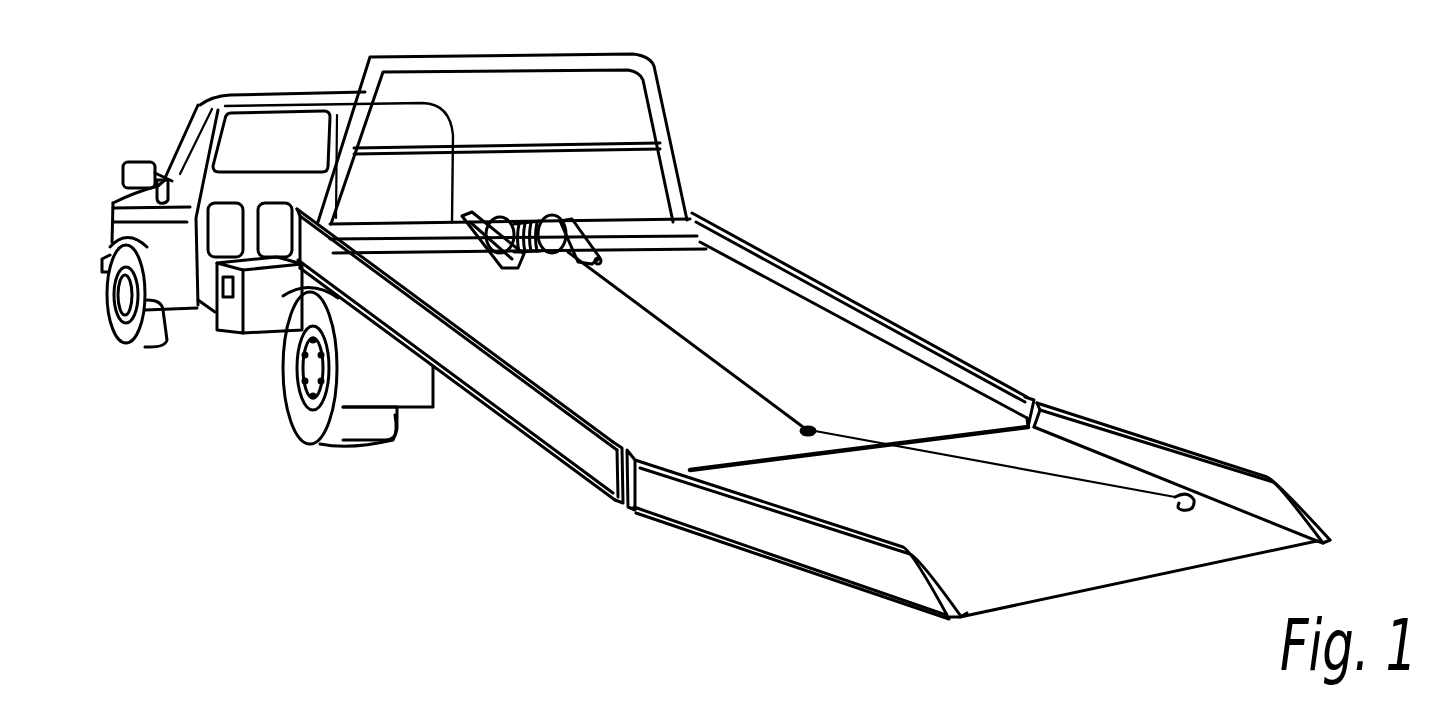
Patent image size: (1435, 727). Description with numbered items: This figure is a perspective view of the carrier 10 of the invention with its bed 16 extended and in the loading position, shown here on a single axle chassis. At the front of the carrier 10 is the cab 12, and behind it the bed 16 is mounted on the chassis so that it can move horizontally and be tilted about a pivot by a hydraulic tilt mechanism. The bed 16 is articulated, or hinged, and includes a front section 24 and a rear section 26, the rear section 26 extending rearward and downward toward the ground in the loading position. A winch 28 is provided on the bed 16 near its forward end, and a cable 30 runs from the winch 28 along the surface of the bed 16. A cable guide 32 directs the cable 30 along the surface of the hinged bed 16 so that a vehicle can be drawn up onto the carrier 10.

The carrier 10 is at (812, 87).
The cab 12 is at (233, 95).
The bed 16 is at (1032, 385).
The front section 24 is at (853, 299).
The rear section 26 is at (1200, 452).
The winch 28 is at (498, 215).
The cable 30 is at (660, 322).
The cable guide 32 is at (810, 428).